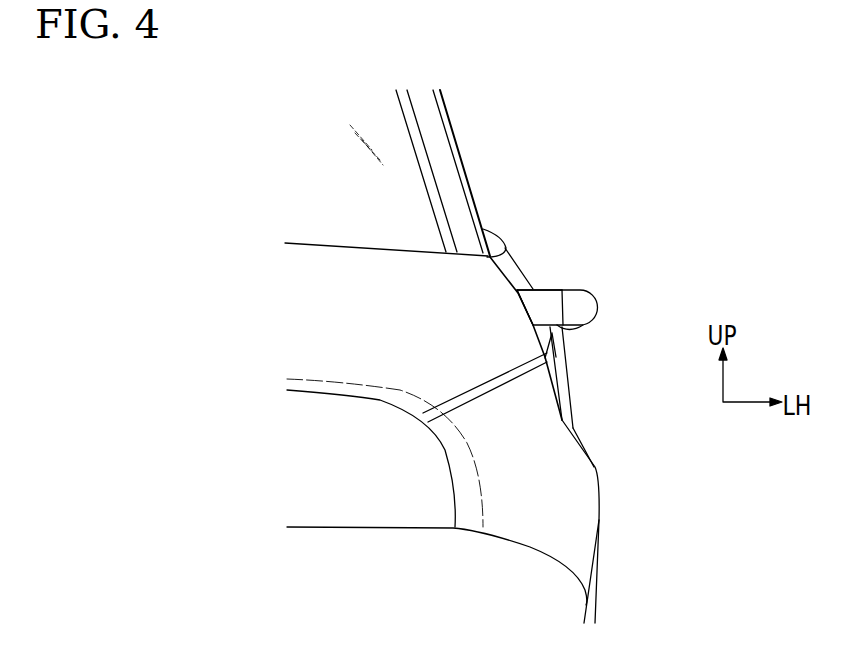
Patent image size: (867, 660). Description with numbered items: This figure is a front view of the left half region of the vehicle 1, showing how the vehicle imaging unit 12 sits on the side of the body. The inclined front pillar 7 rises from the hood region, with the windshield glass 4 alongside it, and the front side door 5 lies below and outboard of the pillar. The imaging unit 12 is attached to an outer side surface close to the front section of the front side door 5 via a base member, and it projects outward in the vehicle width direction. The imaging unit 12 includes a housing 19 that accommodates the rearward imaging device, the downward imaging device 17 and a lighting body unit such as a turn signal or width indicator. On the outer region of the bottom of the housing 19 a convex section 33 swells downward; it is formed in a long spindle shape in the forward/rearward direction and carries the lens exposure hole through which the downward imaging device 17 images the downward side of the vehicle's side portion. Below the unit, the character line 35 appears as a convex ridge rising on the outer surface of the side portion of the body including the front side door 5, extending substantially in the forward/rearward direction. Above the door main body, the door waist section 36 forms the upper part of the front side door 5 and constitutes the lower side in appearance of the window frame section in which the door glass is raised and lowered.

The vehicle 1 is at (460, 99).
The windshield glass 4 is at (385, 128).
The front pillar 7 is at (440, 153).
The door waist section 36 is at (489, 231).
The imaging unit 12 is at (595, 277).
The housing 19 is at (542, 288).
The downward imaging device 17 is at (585, 330).
The convex section 33 is at (565, 335).
The character line 35 is at (545, 356).
The front side door 5 is at (568, 382).